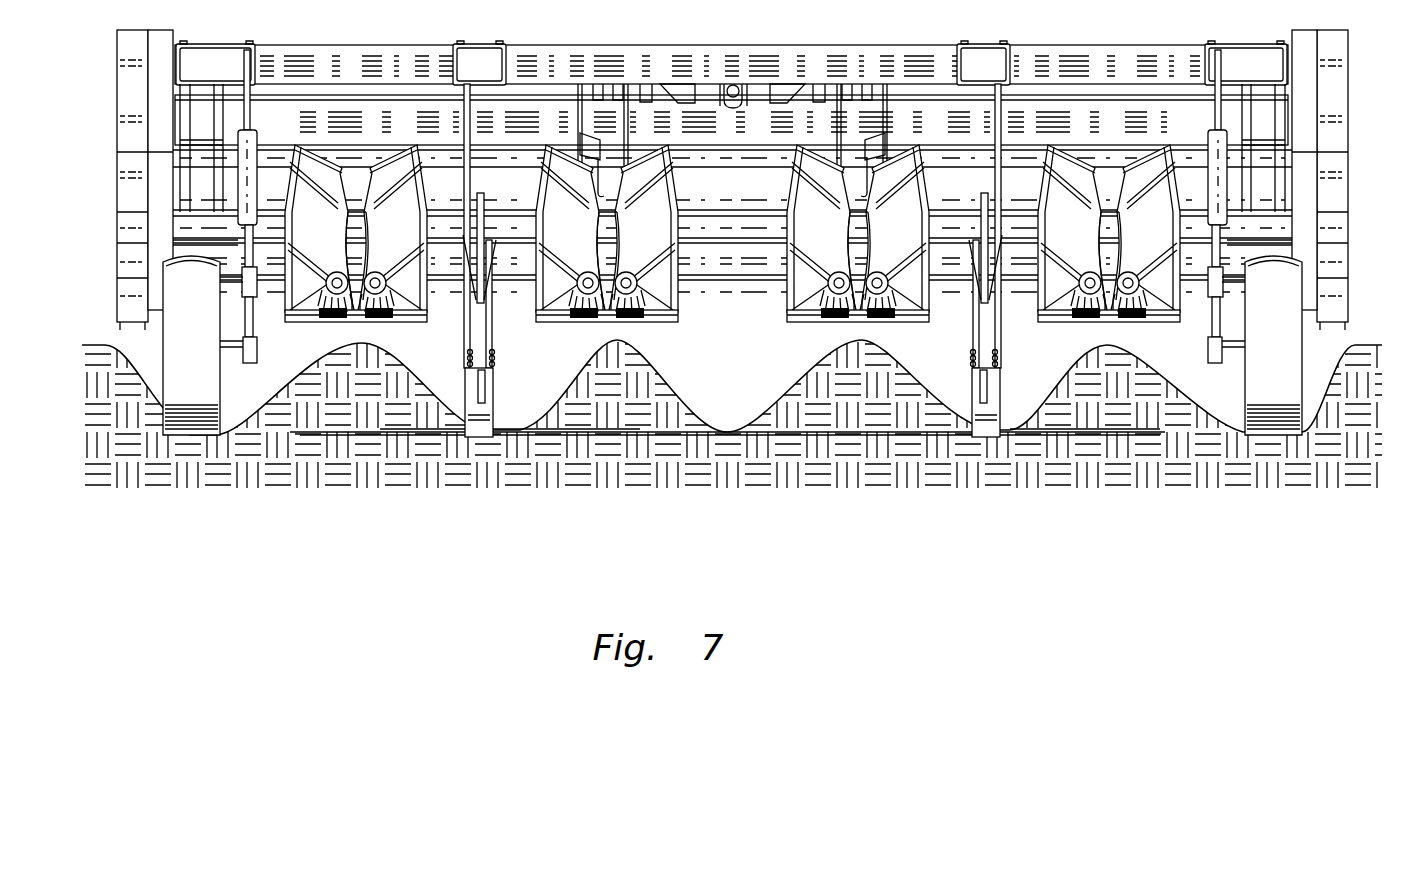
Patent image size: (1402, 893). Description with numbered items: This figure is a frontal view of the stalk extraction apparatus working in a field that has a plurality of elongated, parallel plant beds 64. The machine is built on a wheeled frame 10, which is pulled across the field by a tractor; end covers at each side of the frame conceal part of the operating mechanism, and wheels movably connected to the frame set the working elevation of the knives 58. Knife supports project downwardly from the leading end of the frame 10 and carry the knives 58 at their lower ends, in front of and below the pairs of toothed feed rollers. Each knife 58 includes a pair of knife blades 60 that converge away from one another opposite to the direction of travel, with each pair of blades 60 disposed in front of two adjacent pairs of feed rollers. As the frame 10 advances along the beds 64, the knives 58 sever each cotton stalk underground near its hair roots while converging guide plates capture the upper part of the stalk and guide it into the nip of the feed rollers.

The wheeled frame 10 is at (312, 58).
The knives 58 is at (384, 434).
The knife blades 60 is at (315, 434).
The plant beds 64 is at (110, 345).